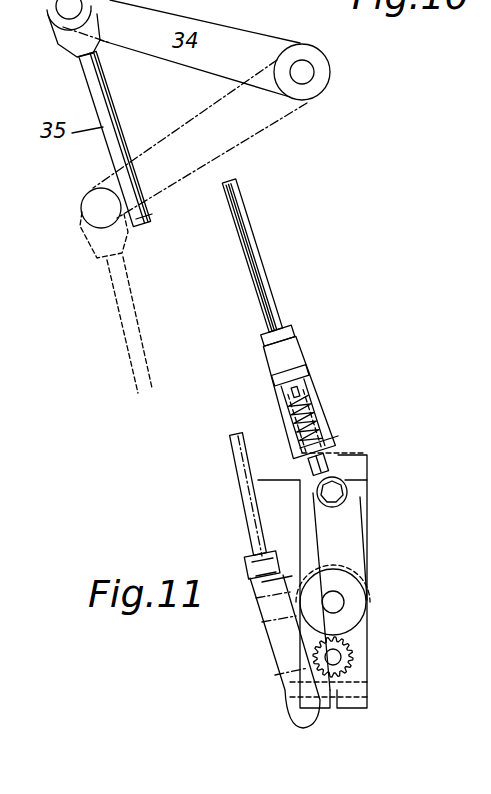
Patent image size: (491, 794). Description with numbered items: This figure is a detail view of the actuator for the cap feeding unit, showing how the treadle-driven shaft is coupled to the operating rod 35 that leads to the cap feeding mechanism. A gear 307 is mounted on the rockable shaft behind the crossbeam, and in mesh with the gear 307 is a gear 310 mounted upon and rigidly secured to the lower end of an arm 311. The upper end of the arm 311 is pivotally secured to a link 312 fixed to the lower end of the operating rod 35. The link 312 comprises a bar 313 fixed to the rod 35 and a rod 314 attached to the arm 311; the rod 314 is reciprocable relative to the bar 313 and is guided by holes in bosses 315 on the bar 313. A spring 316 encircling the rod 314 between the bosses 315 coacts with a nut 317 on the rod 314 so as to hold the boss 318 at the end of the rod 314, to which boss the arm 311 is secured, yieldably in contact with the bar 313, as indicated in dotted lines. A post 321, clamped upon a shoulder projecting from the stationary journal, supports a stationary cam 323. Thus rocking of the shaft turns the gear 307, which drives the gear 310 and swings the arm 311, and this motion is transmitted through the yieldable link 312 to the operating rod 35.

The operating rod 35 is at (262, 260).
The bar 313 is at (297, 359).
The bosses 315 is at (311, 372).
The nut 317 is at (331, 404).
The link 312 is at (333, 408).
The rod 314 is at (347, 454).
The boss 318 is at (340, 466).
The post 321 is at (364, 497).
The arm 311 is at (348, 532).
The gear 310 is at (367, 612).
The gear 307 is at (320, 700).
The spring 316 is at (296, 438).
The stationary cam 323 is at (258, 481).